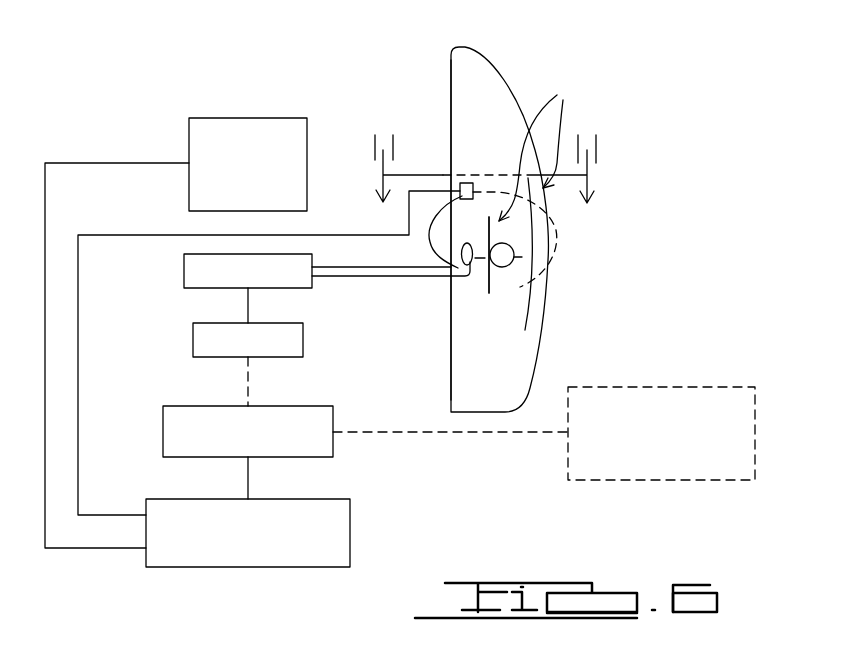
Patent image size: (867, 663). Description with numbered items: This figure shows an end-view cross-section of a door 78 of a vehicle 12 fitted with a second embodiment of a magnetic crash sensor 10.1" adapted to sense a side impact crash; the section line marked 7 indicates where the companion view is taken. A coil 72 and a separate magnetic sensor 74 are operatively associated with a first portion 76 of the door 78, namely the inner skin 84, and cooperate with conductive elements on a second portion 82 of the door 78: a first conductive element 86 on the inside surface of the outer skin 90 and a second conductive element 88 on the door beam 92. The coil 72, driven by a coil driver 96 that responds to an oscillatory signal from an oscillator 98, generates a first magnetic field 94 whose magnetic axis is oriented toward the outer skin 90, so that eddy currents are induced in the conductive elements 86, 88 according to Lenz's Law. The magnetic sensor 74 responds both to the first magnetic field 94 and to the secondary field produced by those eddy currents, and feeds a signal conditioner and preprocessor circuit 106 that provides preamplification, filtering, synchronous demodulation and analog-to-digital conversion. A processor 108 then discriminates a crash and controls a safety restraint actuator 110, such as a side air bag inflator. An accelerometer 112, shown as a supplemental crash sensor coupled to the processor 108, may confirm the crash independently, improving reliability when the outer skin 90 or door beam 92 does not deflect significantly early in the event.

The section line 7- 7 is at (487, 169).
The magnetic crash sensor 10.1 is at (647, 120).
The vehicle 12 is at (525, 63).
The coil 72 is at (463, 262).
The magnetic sensor 74 is at (463, 183).
The first portion 76 is at (462, 224).
The door 78 is at (438, 75).
The second portion 82 is at (543, 147).
The inner skin 84 is at (450, 333).
The first conductive element 86 is at (540, 272).
The second conductive element 88 is at (497, 267).
The outer skin 90 is at (537, 339).
The door beam 92 is at (503, 267).
The first magnetic field 94 is at (553, 233).
The coil driver 96 is at (188, 272).
The oscillator 98 is at (194, 339).
The signal conditioner and preprocessor circuit 106 is at (350, 533).
The processor 108 is at (330, 448).
The safety restraint actuator 110 is at (195, 132).
The accelerometer 112 is at (680, 383).